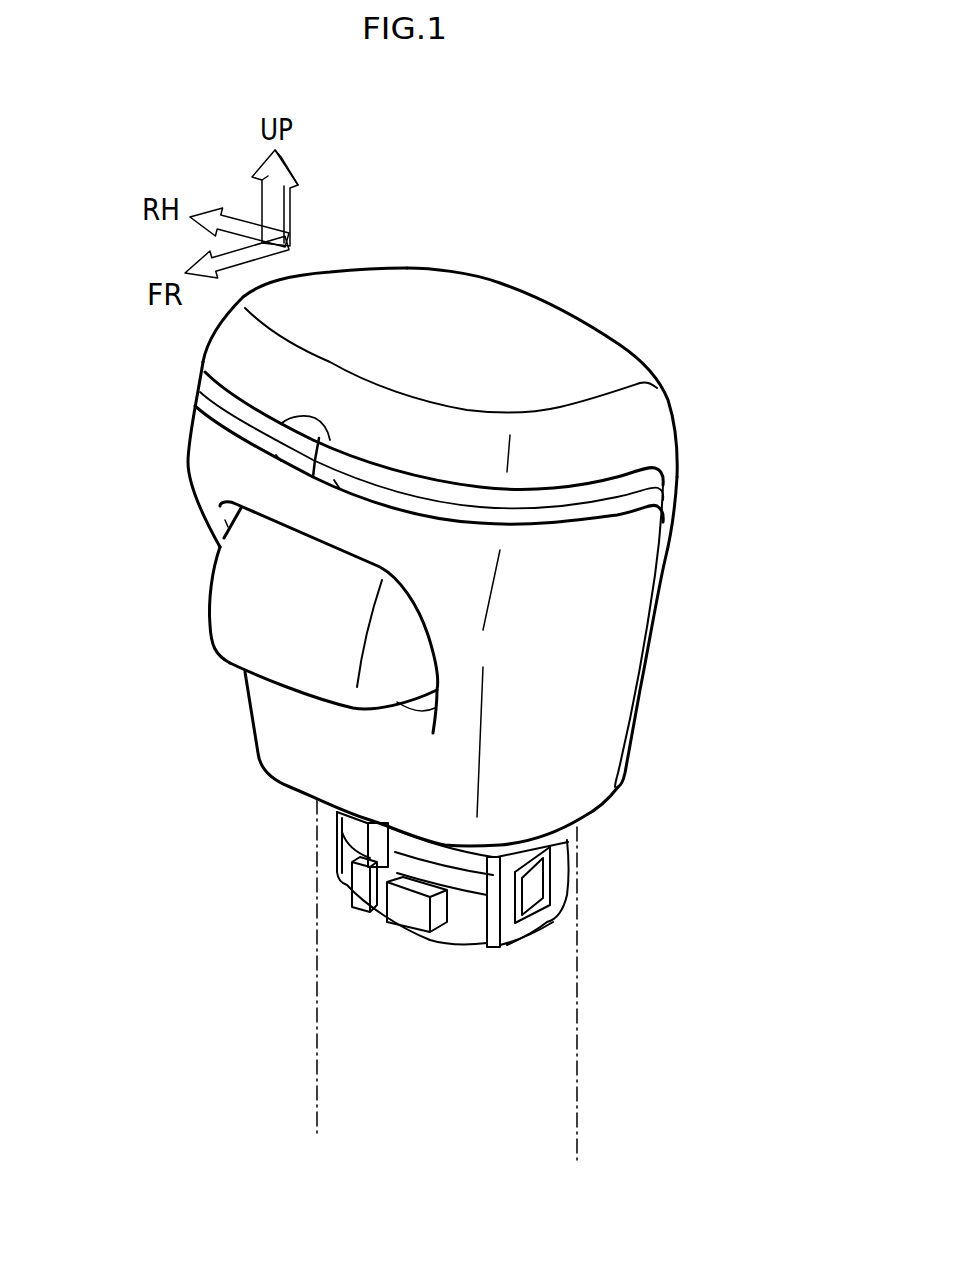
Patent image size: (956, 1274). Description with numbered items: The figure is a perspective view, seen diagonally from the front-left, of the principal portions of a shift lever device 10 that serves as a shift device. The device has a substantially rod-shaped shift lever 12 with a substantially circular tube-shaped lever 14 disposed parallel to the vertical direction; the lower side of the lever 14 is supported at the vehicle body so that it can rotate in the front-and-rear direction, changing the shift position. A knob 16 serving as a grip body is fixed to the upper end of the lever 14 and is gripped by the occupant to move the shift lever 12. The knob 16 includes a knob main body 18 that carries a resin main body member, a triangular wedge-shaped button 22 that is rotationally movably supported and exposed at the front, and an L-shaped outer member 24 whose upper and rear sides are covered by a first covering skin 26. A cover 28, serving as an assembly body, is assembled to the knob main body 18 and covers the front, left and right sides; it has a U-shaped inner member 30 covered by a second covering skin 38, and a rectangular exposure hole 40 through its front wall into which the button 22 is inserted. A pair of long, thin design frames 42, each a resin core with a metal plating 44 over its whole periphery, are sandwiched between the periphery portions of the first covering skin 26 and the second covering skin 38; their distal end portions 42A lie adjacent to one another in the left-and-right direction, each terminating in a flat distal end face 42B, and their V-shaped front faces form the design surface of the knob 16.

The shift lever device 10 is at (397, 483).
The shift lever 12 is at (650, 228).
The lever 14 is at (316, 990).
The knob 16 is at (512, 238).
The knob main body 18 is at (405, 268).
The button 22 is at (210, 605).
The outer member 24 is at (530, 318).
The first covering skin 26 is at (590, 357).
The cover 28 is at (250, 722).
The inner member 30 is at (617, 617).
The second covering skin 38 is at (613, 683).
The exposure hole 40 is at (225, 540).
The design frame 42 is at (252, 388).
The distal end portion 42A is at (278, 458).
The distal end face 42B is at (283, 424).
The metal plating 44 is at (203, 406).